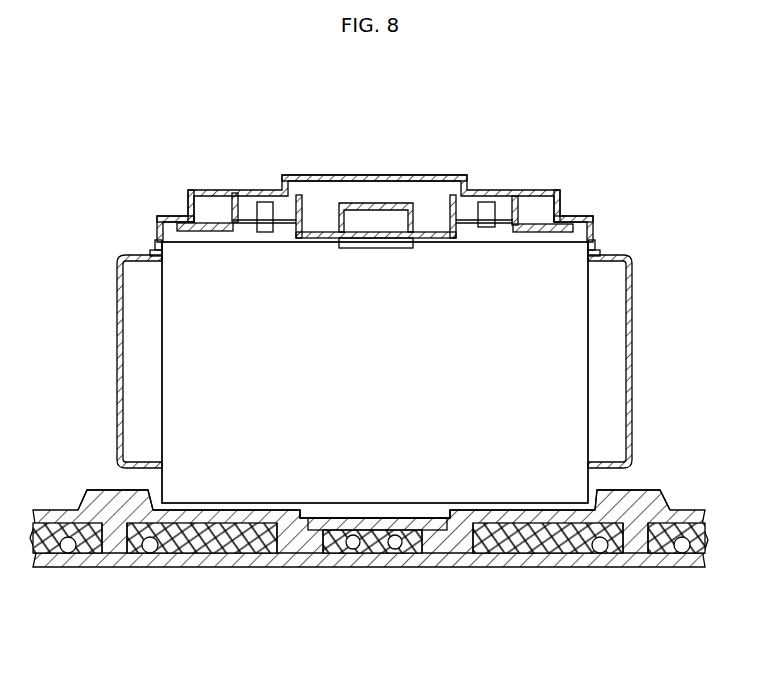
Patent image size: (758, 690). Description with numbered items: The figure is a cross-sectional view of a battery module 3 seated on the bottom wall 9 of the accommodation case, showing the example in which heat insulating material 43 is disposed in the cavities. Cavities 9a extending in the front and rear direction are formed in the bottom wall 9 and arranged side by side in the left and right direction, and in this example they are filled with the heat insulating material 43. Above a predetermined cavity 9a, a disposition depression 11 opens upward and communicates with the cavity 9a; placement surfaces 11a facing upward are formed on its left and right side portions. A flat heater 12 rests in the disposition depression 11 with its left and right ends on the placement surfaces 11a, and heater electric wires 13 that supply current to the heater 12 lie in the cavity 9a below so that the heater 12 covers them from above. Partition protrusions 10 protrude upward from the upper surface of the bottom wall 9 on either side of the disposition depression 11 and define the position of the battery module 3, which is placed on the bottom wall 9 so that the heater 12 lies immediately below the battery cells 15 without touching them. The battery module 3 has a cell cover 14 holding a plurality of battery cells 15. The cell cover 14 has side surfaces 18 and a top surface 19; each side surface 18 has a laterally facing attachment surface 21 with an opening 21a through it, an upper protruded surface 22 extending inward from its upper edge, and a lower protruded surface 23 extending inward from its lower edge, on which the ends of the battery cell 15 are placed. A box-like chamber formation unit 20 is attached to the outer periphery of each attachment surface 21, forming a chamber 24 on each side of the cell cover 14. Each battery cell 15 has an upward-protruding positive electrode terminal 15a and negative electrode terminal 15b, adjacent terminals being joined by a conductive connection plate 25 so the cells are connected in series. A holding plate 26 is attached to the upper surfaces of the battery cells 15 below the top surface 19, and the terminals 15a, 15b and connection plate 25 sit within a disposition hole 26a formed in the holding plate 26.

The battery module 3 is at (665, 47).
The bottom wall 9 is at (452, 570).
The cavity 9a is at (70, 553).
The partition protrusion 10 is at (100, 490).
The disposition depression 11 is at (495, 517).
The placement surface 11a is at (297, 520).
The heater 12 is at (333, 530).
The heater electric wire 13 is at (352, 549).
The cell cover 14 is at (217, 195).
The battery cell 15 is at (572, 326).
The positive electrode terminal 15a is at (265, 205).
The negative electrode terminal 15b is at (488, 205).
The side surface 18 is at (155, 222).
The top surface 19 is at (412, 177).
The chamber formation unit 20 is at (117, 343).
The attachment surface 21 is at (154, 242).
The opening 21a is at (158, 262).
The upper protruded surface 22 is at (175, 205).
The lower protruded surface 23 is at (193, 530).
The chamber 24 is at (131, 371).
The connection plate 25 is at (238, 205).
The holding plate 26 is at (377, 203).
The disposition hole 26a is at (299, 205).
The heat insulating material 43 is at (57, 545).